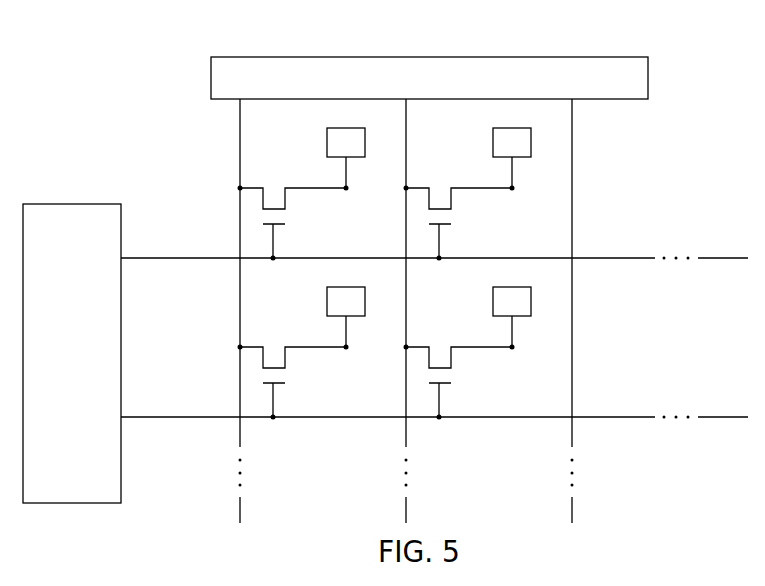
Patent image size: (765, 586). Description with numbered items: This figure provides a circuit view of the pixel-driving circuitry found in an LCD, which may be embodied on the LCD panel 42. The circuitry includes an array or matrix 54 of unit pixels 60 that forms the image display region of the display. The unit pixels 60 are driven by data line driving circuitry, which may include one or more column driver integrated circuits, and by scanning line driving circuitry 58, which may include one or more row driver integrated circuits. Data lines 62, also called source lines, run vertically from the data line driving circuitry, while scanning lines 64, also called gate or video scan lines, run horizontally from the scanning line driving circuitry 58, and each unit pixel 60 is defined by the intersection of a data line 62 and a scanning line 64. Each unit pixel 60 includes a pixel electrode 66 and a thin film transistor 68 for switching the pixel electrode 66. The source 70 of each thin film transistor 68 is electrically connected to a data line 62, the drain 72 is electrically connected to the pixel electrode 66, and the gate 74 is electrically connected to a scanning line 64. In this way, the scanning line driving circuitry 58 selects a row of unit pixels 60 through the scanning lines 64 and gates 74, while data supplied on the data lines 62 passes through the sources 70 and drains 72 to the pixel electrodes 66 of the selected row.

The LCD panel 42 is at (228, 40).
The matrix of unit pixels 54 is at (620, 198).
The scanning line driving circuitry 58 is at (103, 205).
The unit pixel 60 is at (367, 263).
The data line 62 is at (242, 428).
The scanning line 64 is at (140, 258).
The pixel electrode 66 is at (328, 128).
The thin film transistor 68 is at (288, 218).
The source 70 is at (243, 186).
The drain 72 is at (344, 188).
The gate 74 is at (276, 256).